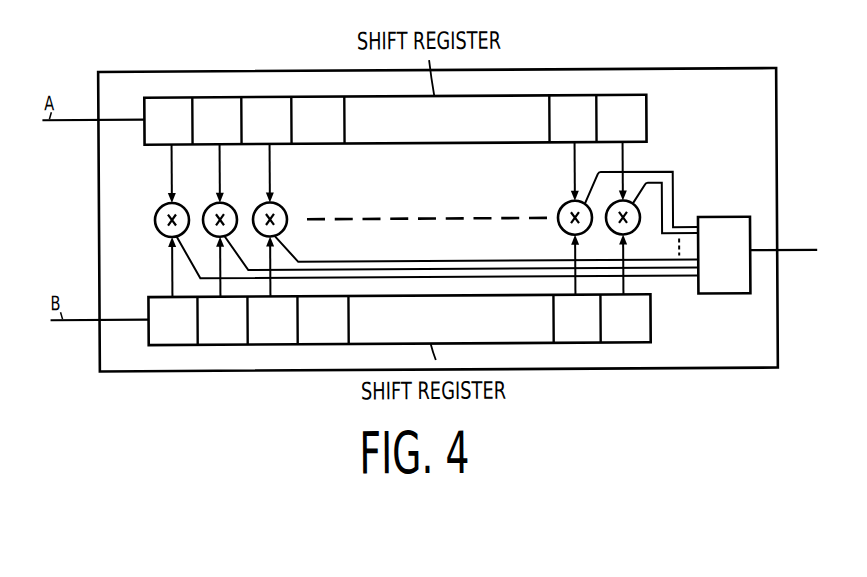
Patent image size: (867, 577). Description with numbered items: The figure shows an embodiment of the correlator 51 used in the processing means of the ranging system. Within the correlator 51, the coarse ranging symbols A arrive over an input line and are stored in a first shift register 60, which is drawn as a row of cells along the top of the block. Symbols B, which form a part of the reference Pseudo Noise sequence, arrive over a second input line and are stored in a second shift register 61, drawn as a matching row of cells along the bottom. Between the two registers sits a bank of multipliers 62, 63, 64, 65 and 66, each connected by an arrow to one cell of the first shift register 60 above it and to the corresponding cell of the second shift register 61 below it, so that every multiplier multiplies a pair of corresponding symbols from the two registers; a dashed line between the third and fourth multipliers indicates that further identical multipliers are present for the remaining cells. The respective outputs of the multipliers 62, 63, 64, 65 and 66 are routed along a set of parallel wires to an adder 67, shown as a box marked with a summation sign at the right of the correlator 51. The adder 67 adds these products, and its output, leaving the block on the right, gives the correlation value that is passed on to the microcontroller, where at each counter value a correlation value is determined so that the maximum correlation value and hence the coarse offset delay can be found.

The correlator 51 is at (708, 68).
The first shift register 60 is at (432, 143).
The second shift register 61 is at (650, 329).
The multiplier 62 is at (184, 205).
The multiplier 63 is at (233, 203).
The multiplier 64 is at (283, 203).
The multiplier 65 is at (563, 206).
The multiplier 66 is at (612, 232).
The adder 67 is at (718, 218).